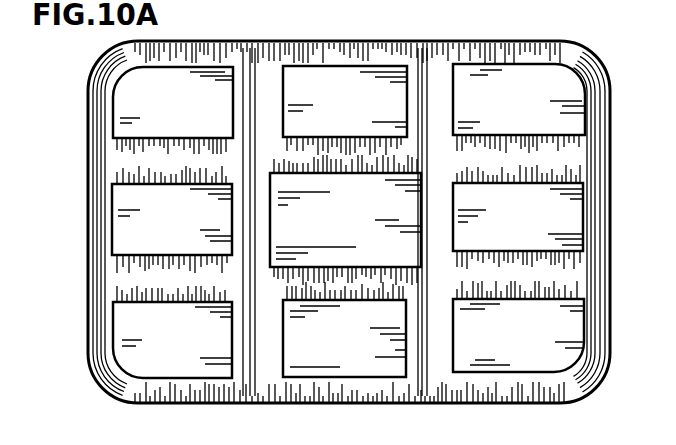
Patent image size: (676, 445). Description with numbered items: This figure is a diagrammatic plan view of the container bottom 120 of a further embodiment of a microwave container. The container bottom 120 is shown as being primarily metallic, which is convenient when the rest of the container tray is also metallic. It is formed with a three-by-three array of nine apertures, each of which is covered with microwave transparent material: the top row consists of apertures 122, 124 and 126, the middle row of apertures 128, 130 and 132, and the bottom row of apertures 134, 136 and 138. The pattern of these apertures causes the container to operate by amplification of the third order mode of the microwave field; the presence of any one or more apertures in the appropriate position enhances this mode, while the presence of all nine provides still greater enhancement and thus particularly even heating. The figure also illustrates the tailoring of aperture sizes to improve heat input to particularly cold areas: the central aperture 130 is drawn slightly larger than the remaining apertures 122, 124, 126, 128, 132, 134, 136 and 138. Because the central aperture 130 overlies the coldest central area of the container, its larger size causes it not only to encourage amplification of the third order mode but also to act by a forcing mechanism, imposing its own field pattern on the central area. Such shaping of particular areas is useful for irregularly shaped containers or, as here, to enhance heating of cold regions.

The container bottom 120 is at (389, 42).
The aperture 122 is at (154, 121).
The aperture 124 is at (322, 121).
The aperture 126 is at (492, 121).
The aperture 128 is at (152, 231).
The central aperture 130 is at (329, 231).
The aperture 132 is at (496, 229).
The aperture 134 is at (157, 357).
The aperture 136 is at (331, 357).
The aperture 138 is at (497, 359).